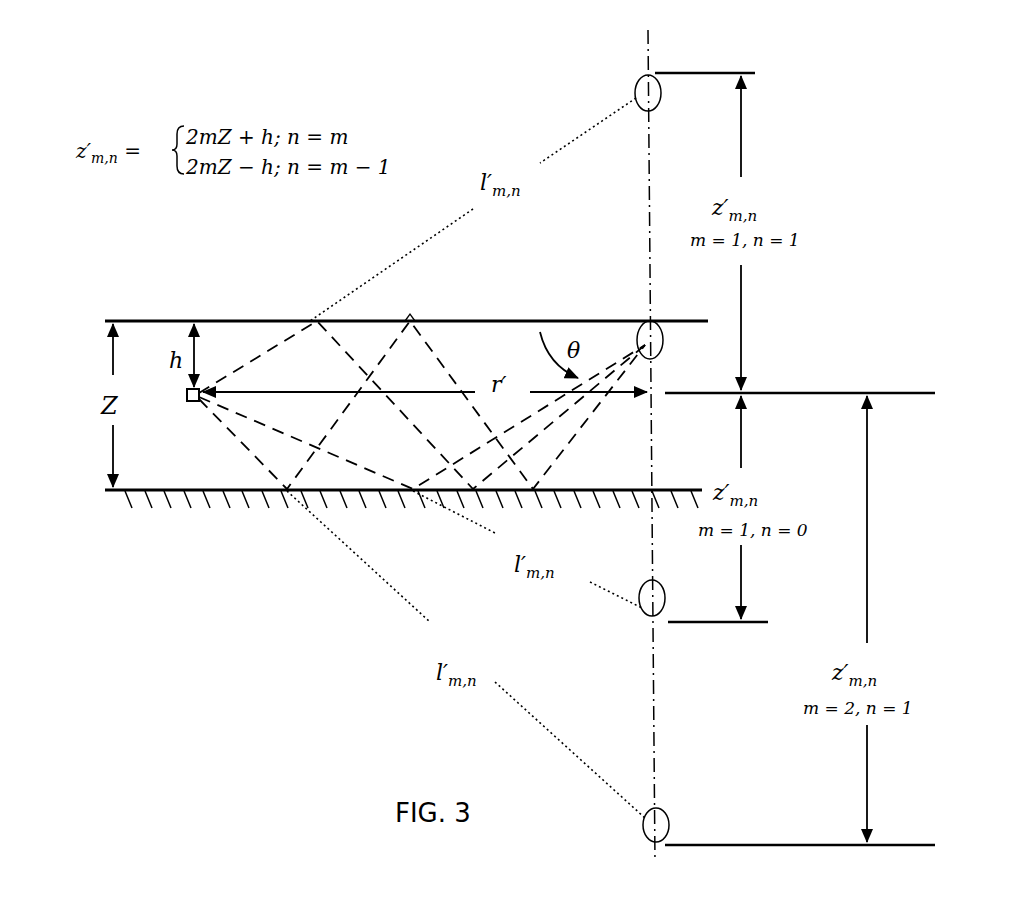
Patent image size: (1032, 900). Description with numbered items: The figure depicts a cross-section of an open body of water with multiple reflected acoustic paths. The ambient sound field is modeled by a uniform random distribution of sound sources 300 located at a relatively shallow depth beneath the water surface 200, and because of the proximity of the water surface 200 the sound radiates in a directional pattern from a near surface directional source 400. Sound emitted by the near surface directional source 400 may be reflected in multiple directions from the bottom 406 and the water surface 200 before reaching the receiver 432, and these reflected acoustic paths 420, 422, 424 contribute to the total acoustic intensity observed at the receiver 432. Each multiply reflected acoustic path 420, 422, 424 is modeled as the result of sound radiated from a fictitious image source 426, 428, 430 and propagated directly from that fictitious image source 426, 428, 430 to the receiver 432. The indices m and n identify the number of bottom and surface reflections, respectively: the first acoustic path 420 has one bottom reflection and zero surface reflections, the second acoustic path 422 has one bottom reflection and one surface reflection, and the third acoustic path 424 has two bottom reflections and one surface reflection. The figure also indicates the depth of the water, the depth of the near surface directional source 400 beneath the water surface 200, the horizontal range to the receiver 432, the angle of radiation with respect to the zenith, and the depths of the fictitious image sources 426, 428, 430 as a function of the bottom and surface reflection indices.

The water surface 200 is at (172, 320).
The sound sources 300 is at (136, 333).
The near surface directional source 400 is at (662, 355).
The bottom 406 is at (105, 492).
The first acoustic path 420 is at (333, 456).
The second acoustic path 422 is at (258, 352).
The third acoustic path 424 is at (237, 447).
The fictitious image source 426 is at (647, 614).
The fictitious image source 428 is at (655, 72).
The fictitious image source 430 is at (662, 812).
The receiver 432 is at (193, 403).